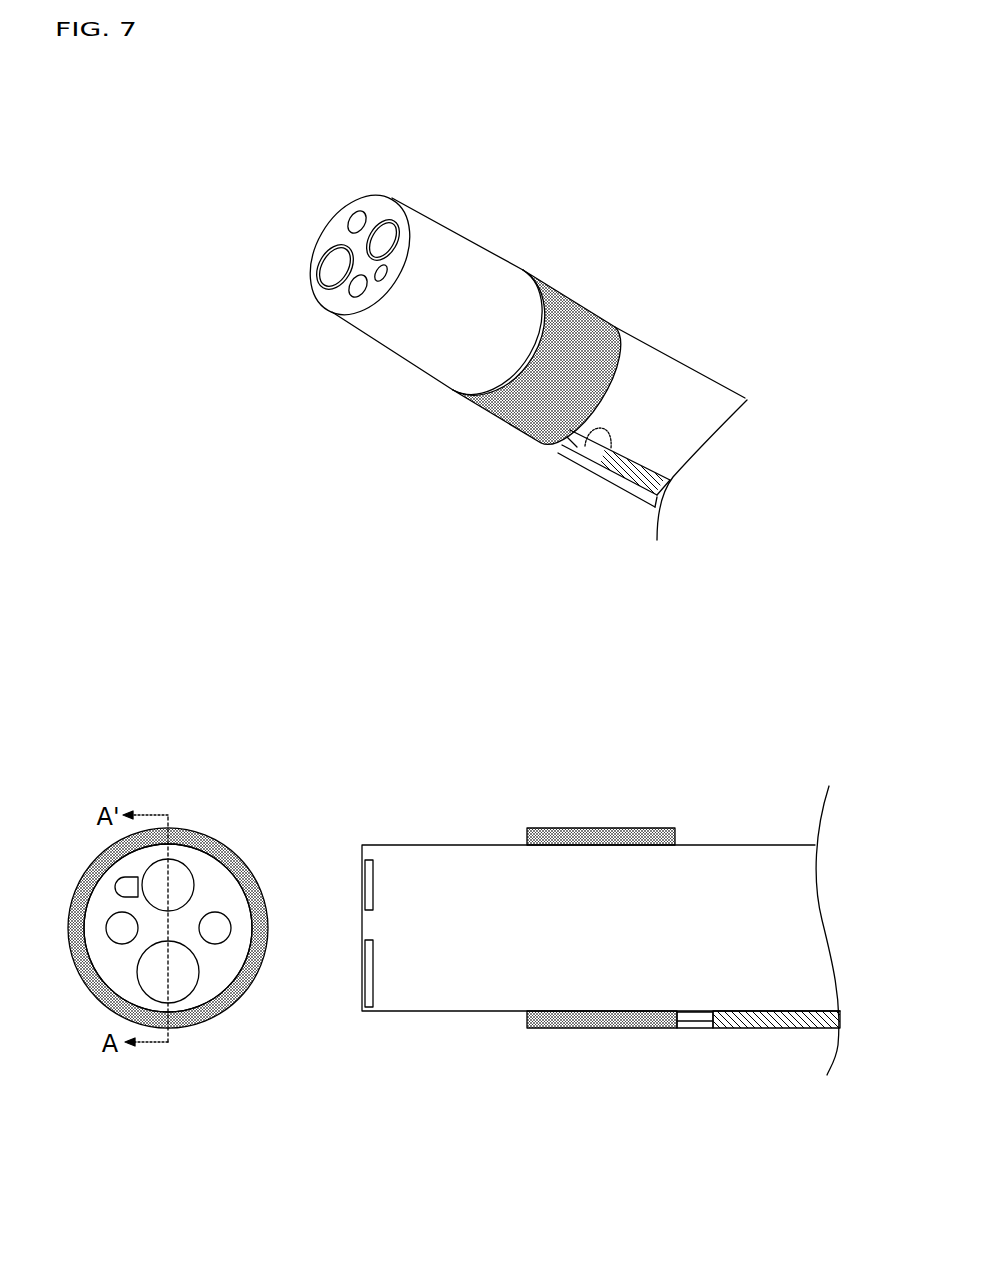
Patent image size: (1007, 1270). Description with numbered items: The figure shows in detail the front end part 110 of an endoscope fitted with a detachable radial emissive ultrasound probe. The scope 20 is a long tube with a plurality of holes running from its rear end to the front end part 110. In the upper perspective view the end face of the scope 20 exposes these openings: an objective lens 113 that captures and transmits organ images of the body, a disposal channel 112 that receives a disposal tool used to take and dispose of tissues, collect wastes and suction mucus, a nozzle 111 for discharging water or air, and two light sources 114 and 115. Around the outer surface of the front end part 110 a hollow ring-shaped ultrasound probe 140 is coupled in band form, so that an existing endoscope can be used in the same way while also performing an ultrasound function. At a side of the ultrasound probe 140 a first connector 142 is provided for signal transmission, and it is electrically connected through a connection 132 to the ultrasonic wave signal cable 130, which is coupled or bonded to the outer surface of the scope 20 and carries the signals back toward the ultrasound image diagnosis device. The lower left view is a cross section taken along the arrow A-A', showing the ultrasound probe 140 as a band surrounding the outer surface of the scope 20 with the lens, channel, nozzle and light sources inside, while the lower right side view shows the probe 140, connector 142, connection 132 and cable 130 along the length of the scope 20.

The scope 20 is at (480, 247).
The front end part 110 is at (380, 152).
The nozzle 111 is at (380, 283).
The disposal channel 112 is at (333, 270).
The objective lens 113 is at (384, 224).
The light source 114 is at (355, 288).
The light source 115 is at (359, 221).
The ultrasonic wave signal cable 130 is at (613, 478).
The cable connection portion 132 is at (565, 447).
The ultrasound probe 140 is at (574, 302).
The first connector 142 is at (606, 462).